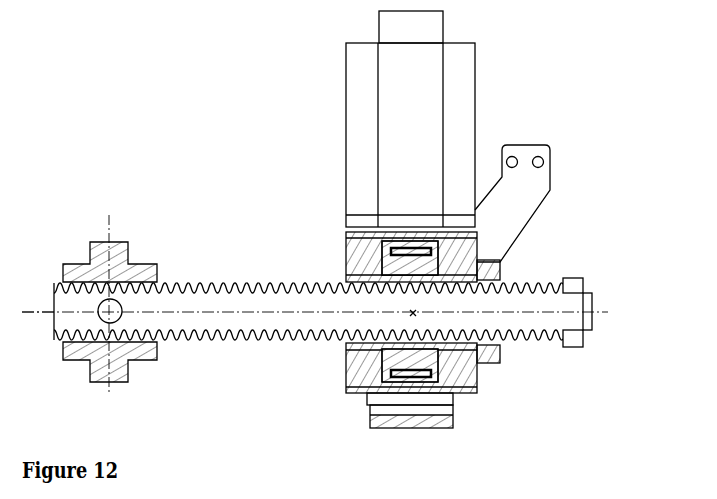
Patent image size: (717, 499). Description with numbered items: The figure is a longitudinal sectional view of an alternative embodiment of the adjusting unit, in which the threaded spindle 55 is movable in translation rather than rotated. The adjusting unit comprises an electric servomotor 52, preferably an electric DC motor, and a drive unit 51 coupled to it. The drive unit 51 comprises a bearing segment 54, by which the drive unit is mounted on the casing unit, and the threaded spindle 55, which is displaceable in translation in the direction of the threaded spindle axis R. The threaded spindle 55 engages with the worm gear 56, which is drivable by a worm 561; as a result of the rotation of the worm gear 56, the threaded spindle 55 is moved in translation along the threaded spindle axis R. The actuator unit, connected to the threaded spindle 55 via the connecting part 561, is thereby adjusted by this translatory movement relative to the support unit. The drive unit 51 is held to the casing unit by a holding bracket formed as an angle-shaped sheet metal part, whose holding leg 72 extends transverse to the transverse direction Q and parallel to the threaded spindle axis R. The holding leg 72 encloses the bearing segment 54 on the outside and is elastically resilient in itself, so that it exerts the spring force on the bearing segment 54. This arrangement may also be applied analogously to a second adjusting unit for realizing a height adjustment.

The drive unit 51 is at (322, 240).
The servomotor 52 is at (423, 108).
The bearing segment 54 is at (445, 357).
The threaded spindle 55 is at (510, 300).
The worm gear 56 is at (418, 355).
The worm 561 is at (100, 252).
The holding leg 72 is at (517, 192).
The threaded spindle axis R is at (32, 310).
The transverse direction Q is at (411, 318).